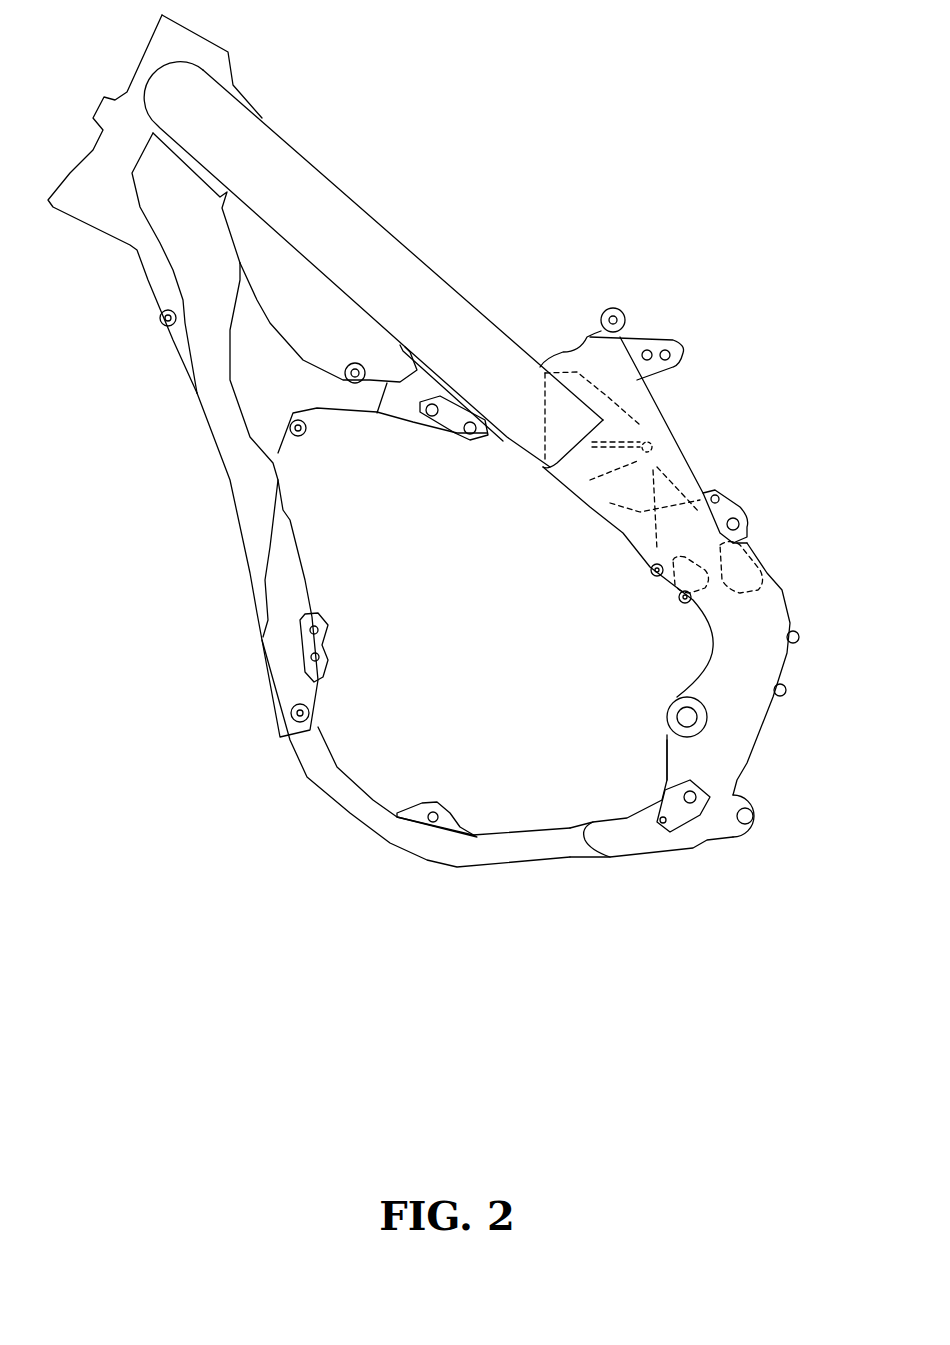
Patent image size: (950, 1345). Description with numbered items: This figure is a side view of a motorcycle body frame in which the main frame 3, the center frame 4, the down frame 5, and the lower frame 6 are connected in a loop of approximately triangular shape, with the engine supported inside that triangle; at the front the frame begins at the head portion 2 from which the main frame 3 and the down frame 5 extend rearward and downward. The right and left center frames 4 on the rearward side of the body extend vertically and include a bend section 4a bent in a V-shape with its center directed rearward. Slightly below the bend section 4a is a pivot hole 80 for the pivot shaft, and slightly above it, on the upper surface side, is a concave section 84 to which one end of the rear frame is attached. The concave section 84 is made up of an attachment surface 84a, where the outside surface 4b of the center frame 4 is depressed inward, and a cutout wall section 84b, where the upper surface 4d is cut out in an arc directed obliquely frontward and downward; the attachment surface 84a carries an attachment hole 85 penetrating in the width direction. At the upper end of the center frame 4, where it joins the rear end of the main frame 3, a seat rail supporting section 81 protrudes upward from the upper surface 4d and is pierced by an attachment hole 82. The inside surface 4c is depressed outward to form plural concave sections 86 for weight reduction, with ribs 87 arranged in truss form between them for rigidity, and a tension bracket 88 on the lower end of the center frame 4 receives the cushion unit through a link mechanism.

The head pipe 2 is at (135, 103).
The main frame 3 is at (360, 227).
The center frame 4 is at (678, 470).
The bend section 4a is at (767, 637).
The outside surface 4b is at (640, 408).
The inside surface 4c is at (583, 478).
The upper surface 4d is at (652, 417).
The down frame 5 is at (258, 507).
The lower frame 6 is at (538, 845).
The pivot hole 80 is at (673, 713).
The seat rail supporting section 81 is at (598, 330).
The attachment hole 82 is at (615, 305).
The concave section 84 is at (727, 508).
The attachment surface 84a is at (740, 530).
The cutout wall section 84b is at (717, 520).
The attachment hole 85 is at (740, 545).
The concave section 86 is at (630, 530).
The rib 87 is at (670, 450).
The tension bracket 88 is at (743, 828).